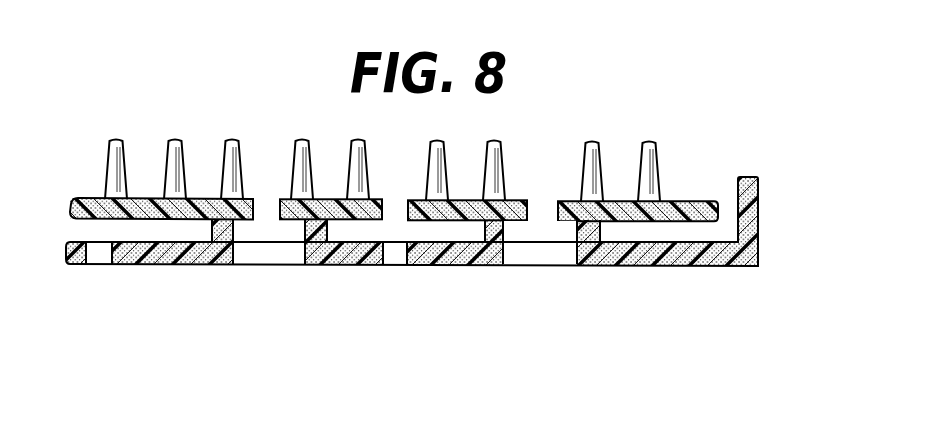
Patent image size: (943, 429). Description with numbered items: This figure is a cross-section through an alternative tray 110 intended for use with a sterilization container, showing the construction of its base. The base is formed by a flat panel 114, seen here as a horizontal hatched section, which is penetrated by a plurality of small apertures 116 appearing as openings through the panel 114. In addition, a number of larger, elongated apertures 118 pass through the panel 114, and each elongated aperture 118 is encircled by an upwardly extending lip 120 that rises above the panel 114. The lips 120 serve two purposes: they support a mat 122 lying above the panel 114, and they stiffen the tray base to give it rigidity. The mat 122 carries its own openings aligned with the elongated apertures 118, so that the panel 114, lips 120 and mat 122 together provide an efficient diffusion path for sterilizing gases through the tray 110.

The tray 110 is at (445, 229).
The flat panel 114 is at (678, 255).
The apertures 116 is at (97, 250).
The elongated apertures 118 is at (282, 252).
The lip 120 is at (600, 228).
The mat 122 is at (695, 208).